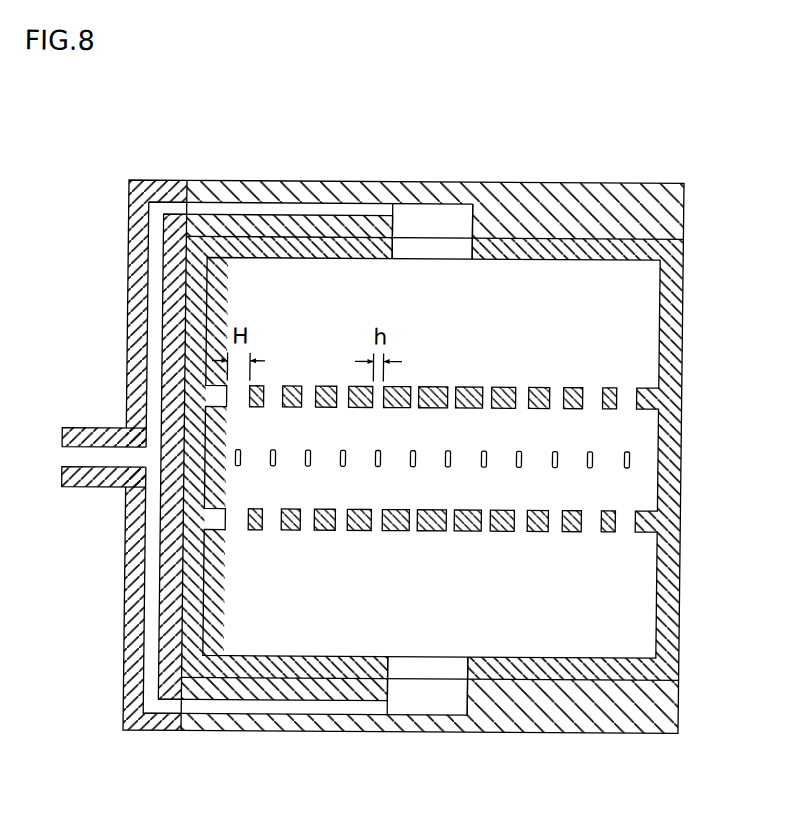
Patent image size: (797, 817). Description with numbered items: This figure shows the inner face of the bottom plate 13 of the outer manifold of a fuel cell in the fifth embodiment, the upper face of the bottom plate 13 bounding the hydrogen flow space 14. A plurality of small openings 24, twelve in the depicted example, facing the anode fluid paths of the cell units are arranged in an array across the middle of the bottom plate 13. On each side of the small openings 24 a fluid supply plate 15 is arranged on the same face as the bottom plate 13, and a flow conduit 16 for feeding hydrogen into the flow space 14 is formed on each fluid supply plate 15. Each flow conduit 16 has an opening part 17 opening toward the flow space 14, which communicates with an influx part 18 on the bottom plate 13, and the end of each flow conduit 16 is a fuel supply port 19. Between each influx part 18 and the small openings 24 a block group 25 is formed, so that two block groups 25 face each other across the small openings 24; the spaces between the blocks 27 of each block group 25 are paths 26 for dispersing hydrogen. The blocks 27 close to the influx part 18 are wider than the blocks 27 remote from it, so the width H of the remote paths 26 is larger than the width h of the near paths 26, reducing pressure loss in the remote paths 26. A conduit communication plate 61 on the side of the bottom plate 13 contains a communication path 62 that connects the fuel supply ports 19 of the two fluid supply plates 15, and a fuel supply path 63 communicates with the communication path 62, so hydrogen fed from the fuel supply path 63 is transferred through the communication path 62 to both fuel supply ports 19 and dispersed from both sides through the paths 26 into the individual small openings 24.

The bottom plate 13 is at (668, 645).
The hydrogen flow space 14 is at (650, 339).
The fluid supply plate 15 is at (614, 192).
The flow conduit 16 is at (274, 211).
The opening part 17 is at (467, 212).
The influx part 18 is at (395, 250).
The fuel supply port 19 is at (152, 208).
The small openings 24 is at (633, 458).
The block group 25 is at (494, 356).
The paths 26 is at (594, 393).
The blocks 27 is at (541, 408).
The conduit communication plate 61 is at (130, 643).
The communication path 62 is at (172, 551).
The fuel supply path 63 is at (89, 456).